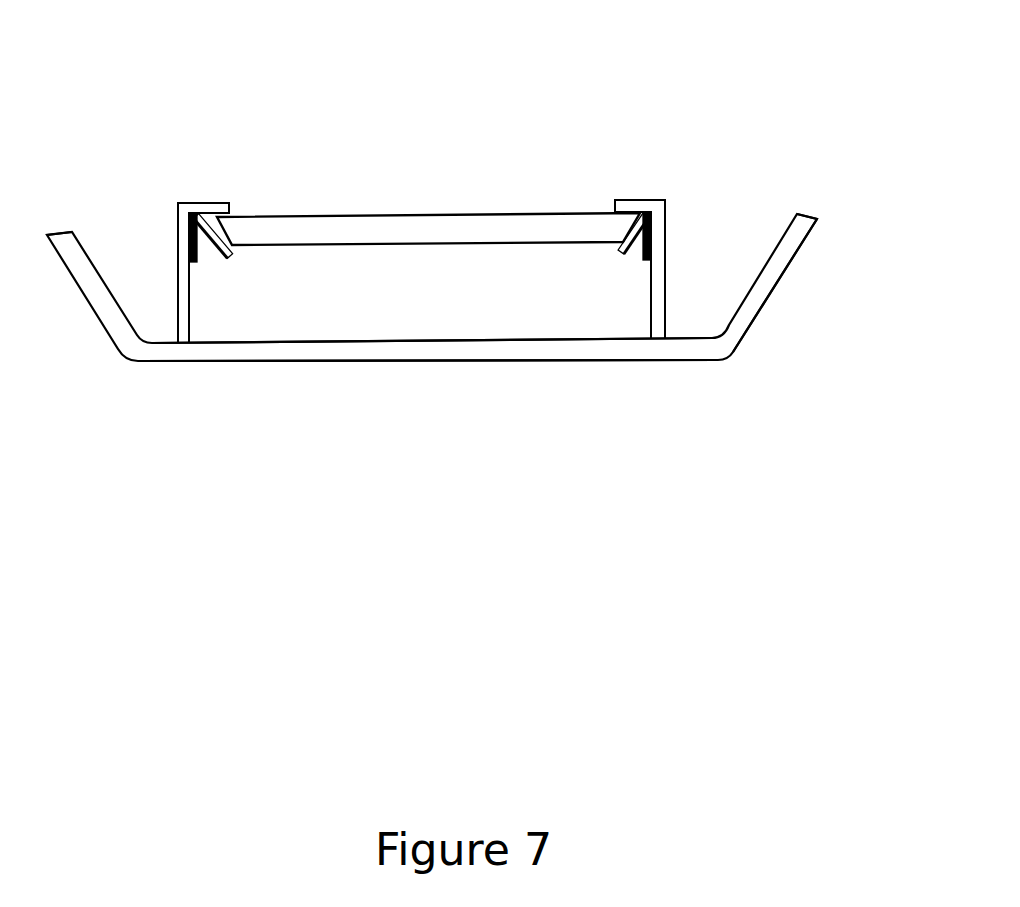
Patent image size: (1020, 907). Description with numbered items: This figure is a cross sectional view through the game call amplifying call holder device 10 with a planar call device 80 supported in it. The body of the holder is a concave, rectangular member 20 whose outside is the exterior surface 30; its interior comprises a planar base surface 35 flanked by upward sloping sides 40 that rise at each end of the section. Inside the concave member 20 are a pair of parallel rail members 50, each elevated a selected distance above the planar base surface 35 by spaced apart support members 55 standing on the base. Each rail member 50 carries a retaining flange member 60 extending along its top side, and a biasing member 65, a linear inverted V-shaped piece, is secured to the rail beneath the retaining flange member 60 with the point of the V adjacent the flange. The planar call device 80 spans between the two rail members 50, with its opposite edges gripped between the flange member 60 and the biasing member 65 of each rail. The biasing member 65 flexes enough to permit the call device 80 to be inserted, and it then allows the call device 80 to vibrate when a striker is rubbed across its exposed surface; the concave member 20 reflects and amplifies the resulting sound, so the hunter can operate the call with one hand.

The game call amplifying call holder device 10 is at (180, 490).
The concave rectangular member 20 is at (363, 348).
The exterior surface 30 is at (547, 362).
The planar base surface 35 is at (478, 338).
The upward sloping sides 40 is at (90, 262).
The rail member 50 is at (177, 216).
The support member 55 is at (185, 326).
The retaining flange member 60 is at (205, 203).
The biasing member 65 is at (219, 255).
The planar call device 80 is at (380, 230).